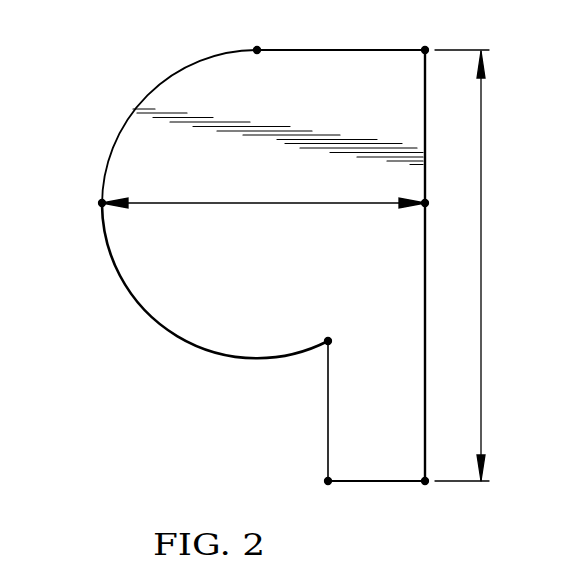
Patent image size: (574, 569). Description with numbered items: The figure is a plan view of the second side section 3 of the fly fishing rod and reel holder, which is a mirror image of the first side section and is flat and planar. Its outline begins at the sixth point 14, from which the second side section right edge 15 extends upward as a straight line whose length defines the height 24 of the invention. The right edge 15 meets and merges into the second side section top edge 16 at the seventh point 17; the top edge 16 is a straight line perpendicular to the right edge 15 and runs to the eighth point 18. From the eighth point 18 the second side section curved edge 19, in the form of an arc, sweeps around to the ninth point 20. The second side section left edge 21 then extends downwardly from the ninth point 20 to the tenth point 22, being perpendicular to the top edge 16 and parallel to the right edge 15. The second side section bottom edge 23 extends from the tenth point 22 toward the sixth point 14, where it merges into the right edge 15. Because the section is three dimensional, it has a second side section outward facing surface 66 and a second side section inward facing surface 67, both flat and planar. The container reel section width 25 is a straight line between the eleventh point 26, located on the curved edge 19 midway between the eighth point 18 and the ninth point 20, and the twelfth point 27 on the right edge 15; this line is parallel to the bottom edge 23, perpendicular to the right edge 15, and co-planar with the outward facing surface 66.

The second side section 3 is at (337, 264).
The sixth point 14 is at (426, 482).
The second side section right edge 15 is at (426, 333).
The second side section top edge 16 is at (333, 50).
The seventh point 17 is at (426, 50).
The eighth point 18 is at (257, 50).
The second side section curved edge 19 is at (168, 77).
The ninth point 20 is at (328, 343).
The second side section left edge 21 is at (328, 416).
The tenth point 22 is at (327, 482).
The second side section bottom edge 23 is at (375, 482).
The height 24 is at (482, 280).
The container reel section width 25 is at (255, 203).
The eleventh point 26 is at (101, 203).
The twelfth point 27 is at (427, 207).
The second side section outward facing surface 66 is at (222, 315).
The second side section inward facing surface 67 is at (138, 334).